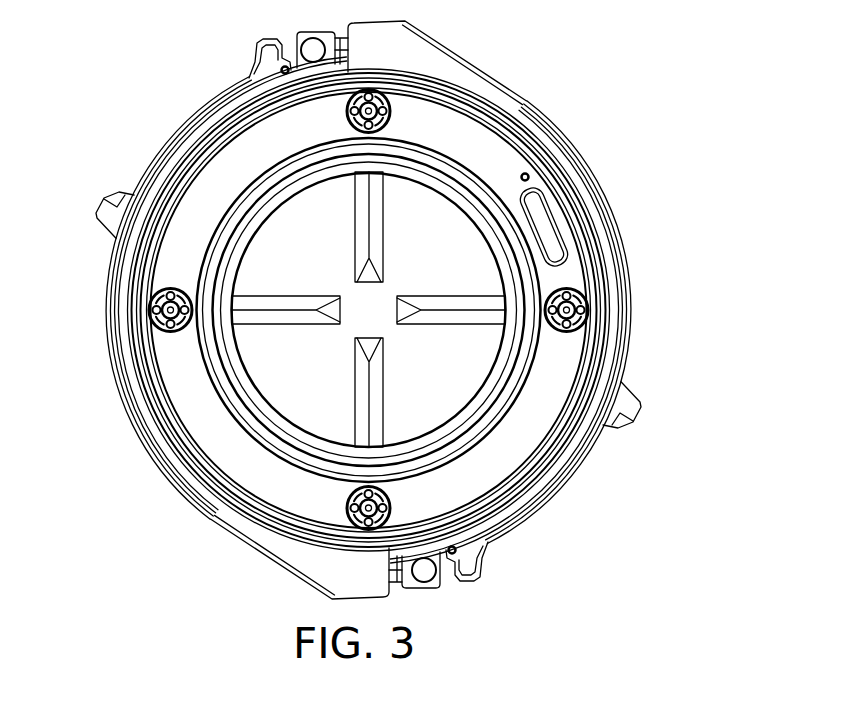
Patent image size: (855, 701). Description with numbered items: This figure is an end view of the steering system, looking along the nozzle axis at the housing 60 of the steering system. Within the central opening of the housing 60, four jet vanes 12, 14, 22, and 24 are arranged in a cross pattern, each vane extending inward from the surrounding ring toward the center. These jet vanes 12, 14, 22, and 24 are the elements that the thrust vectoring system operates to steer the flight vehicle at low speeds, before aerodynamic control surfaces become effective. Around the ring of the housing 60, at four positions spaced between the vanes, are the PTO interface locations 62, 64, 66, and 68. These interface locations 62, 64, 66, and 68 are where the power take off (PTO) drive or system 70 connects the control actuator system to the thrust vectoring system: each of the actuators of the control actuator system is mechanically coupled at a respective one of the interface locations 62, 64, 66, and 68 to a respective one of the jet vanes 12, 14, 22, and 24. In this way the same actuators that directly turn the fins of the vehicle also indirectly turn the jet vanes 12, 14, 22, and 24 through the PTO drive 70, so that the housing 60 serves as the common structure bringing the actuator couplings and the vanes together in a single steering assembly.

The power take off (PTO) drive or system 70 is at (618, 200).
The housing 60 is at (216, 182).
The jet vane 12 is at (378, 218).
The jet vane 14 is at (482, 325).
The jet vane 22 is at (380, 427).
The jet vane 24 is at (265, 317).
The PTO interface location 62 is at (378, 93).
The PTO interface location 64 is at (582, 300).
The PTO interface location 66 is at (352, 515).
The PTO interface location 68 is at (150, 302).